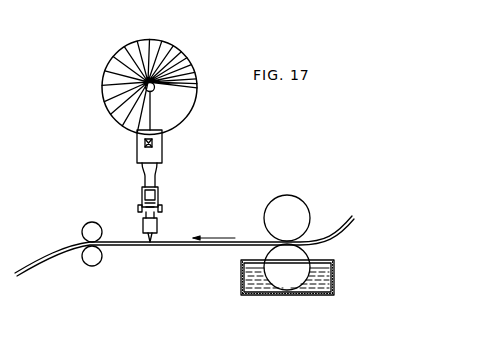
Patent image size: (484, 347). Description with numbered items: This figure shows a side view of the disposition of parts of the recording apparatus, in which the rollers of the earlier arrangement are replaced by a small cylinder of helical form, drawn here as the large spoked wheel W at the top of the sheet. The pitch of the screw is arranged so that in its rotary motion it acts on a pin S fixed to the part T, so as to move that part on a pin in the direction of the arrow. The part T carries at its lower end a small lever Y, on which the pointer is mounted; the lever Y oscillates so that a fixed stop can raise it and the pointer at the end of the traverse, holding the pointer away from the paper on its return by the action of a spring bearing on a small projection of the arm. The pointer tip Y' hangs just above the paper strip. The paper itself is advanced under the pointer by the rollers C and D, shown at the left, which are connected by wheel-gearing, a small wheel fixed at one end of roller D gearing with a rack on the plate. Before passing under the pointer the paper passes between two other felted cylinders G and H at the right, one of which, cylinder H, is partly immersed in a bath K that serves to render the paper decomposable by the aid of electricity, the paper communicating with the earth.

The spoked wheel W is at (149, 87).
The part T is at (149, 146).
The small lever Y is at (150, 190).
The marker / stylus block Y' is at (155, 231).
The pin S is at (184, 246).
The roller C is at (92, 232).
The roller D is at (92, 256).
The felted cylinder G is at (287, 218).
The felted cylinder H is at (287, 267).
The tank / bath K is at (287, 277).